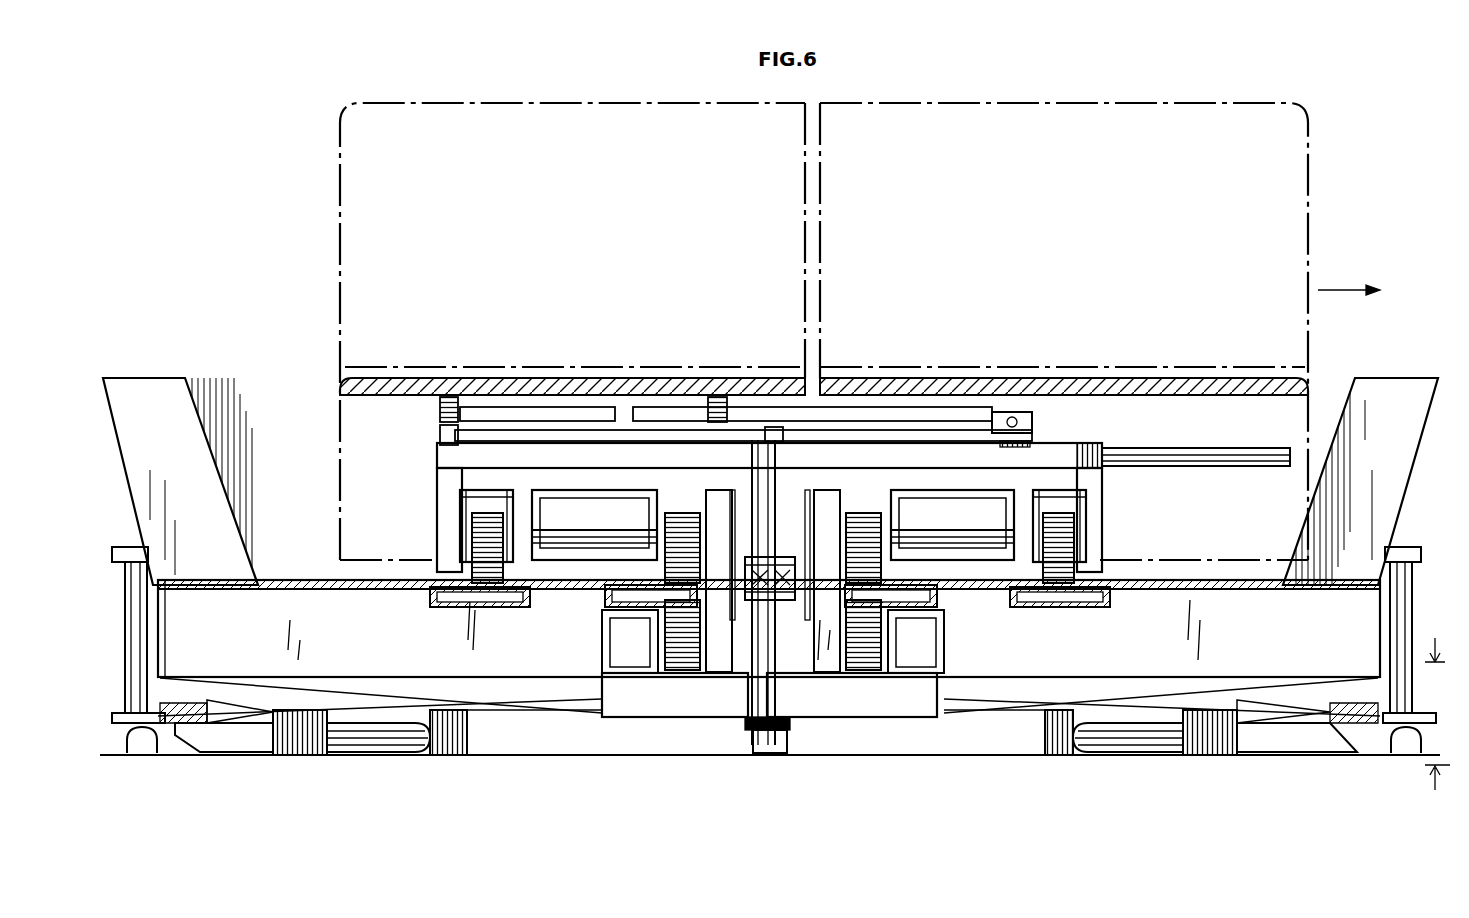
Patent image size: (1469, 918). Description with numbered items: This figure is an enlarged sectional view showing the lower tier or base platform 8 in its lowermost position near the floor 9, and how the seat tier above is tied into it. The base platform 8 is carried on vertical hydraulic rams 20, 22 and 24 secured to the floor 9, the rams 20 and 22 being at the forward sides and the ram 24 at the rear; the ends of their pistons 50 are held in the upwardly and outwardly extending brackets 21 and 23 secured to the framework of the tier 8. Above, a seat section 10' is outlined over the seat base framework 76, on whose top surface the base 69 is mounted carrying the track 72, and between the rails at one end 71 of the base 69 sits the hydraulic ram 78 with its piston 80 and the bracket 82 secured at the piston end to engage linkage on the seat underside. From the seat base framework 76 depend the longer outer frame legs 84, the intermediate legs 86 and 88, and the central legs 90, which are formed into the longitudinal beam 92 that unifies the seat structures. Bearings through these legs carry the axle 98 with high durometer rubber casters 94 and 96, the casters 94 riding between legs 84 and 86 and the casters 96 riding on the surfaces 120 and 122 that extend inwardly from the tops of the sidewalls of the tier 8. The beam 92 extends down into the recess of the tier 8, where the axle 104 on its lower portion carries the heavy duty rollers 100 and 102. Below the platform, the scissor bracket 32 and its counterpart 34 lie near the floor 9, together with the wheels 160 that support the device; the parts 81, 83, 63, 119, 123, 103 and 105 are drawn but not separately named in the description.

The container 10' is at (860, 315).
The base plate 81 is at (522, 398).
The mounting block 83 is at (1032, 412).
The piston 80 is at (935, 438).
The hydraulic ram 78 is at (618, 440).
The bracket 82 is at (1032, 444).
The end of base 71 is at (437, 448).
The frame legs 84 is at (437, 480).
The seat base framework 76 is at (1080, 443).
The carriage 63 is at (488, 459).
The base 69 is at (1108, 450).
The track 72 is at (1260, 450).
The rubber caster 94 is at (487, 535).
The intermediate leg 86 is at (522, 520).
The rubber caster 96 is at (870, 518).
The intermediate leg 88 is at (648, 522).
The central legs 90 is at (718, 498).
The longitudinal beam 92 is at (802, 508).
The vertical hydraulic ram 24 is at (745, 712).
The vertical hydraulic ram 20 is at (165, 625).
The vertical hydraulic ram 22 is at (1380, 620).
The base platform 8 is at (368, 655).
The pad 119 is at (430, 597).
The pad 123 is at (1070, 607).
The axle 98 is at (590, 590).
The surface 120 is at (602, 636).
The surface 122 is at (944, 636).
The gear 103 is at (682, 672).
The gear 105 is at (862, 672).
The heavy duty roller 100 is at (668, 680).
The heavy duty roller 102 is at (840, 678).
The axle 104 is at (793, 691).
The wheel 160 is at (790, 732).
The piston 50 is at (128, 505).
The bracket 21 is at (160, 378).
The bracket 23 is at (1402, 378).
The scissor bracket 32 is at (228, 745).
The castor 34 is at (1305, 748).
The floor 9 is at (780, 791).